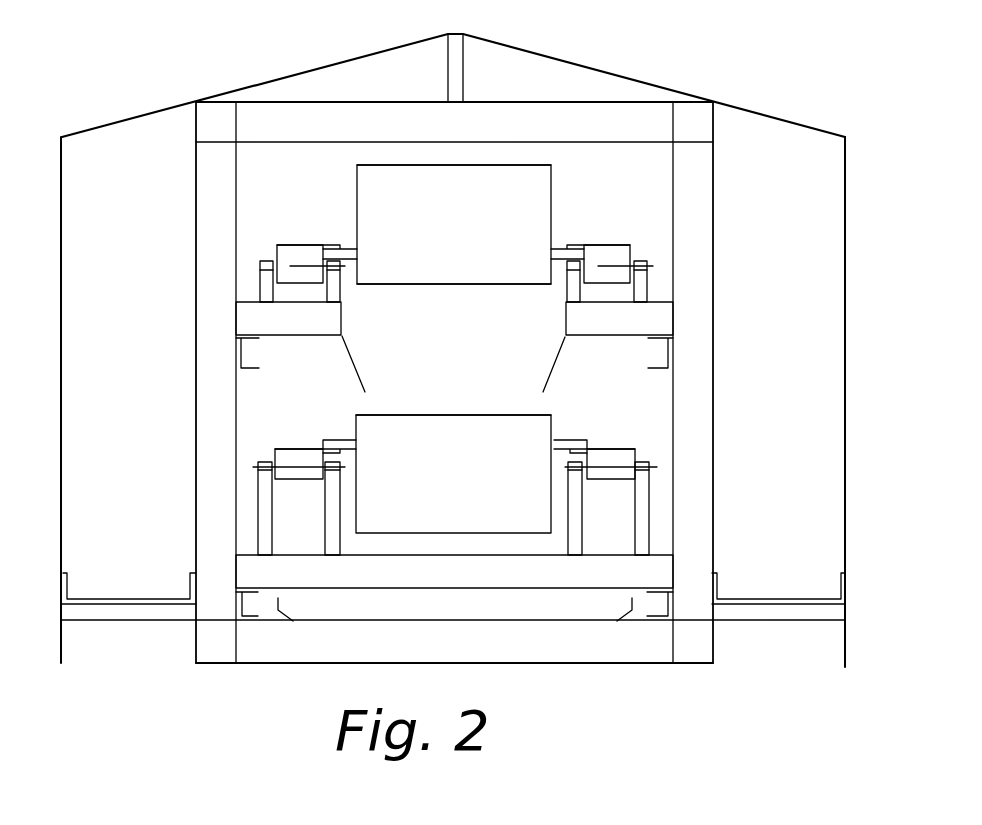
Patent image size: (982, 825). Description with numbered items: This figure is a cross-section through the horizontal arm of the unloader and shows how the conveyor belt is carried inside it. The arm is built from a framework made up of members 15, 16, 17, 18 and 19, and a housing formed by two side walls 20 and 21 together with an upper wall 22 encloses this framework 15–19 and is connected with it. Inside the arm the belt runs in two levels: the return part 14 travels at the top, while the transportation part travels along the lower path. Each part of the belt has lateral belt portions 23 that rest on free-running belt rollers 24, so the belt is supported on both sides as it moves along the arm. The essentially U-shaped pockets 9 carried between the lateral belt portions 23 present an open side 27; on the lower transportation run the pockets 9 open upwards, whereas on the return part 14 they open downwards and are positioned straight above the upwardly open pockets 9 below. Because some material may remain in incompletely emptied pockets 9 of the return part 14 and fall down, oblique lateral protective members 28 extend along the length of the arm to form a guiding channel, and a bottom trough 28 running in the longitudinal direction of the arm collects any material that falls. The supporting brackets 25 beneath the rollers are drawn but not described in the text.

The pocket 9 is at (357, 178).
The return part 14 is at (567, 176).
The framework member 15 is at (713, 337).
The framework member 16 is at (195, 332).
The framework member 17 is at (657, 555).
The framework member 18 is at (575, 664).
The framework member 19 is at (620, 101).
The side wall 20 is at (846, 293).
The side wall 21 is at (61, 326).
The upper wall 22 is at (361, 56).
The lateral belt portion 23 is at (300, 245).
The belt roller 24 is at (274, 257).
The support bracket 25 is at (352, 357).
The open side of the pocket 27 is at (462, 272).
The bottom trough 28 is at (274, 597).